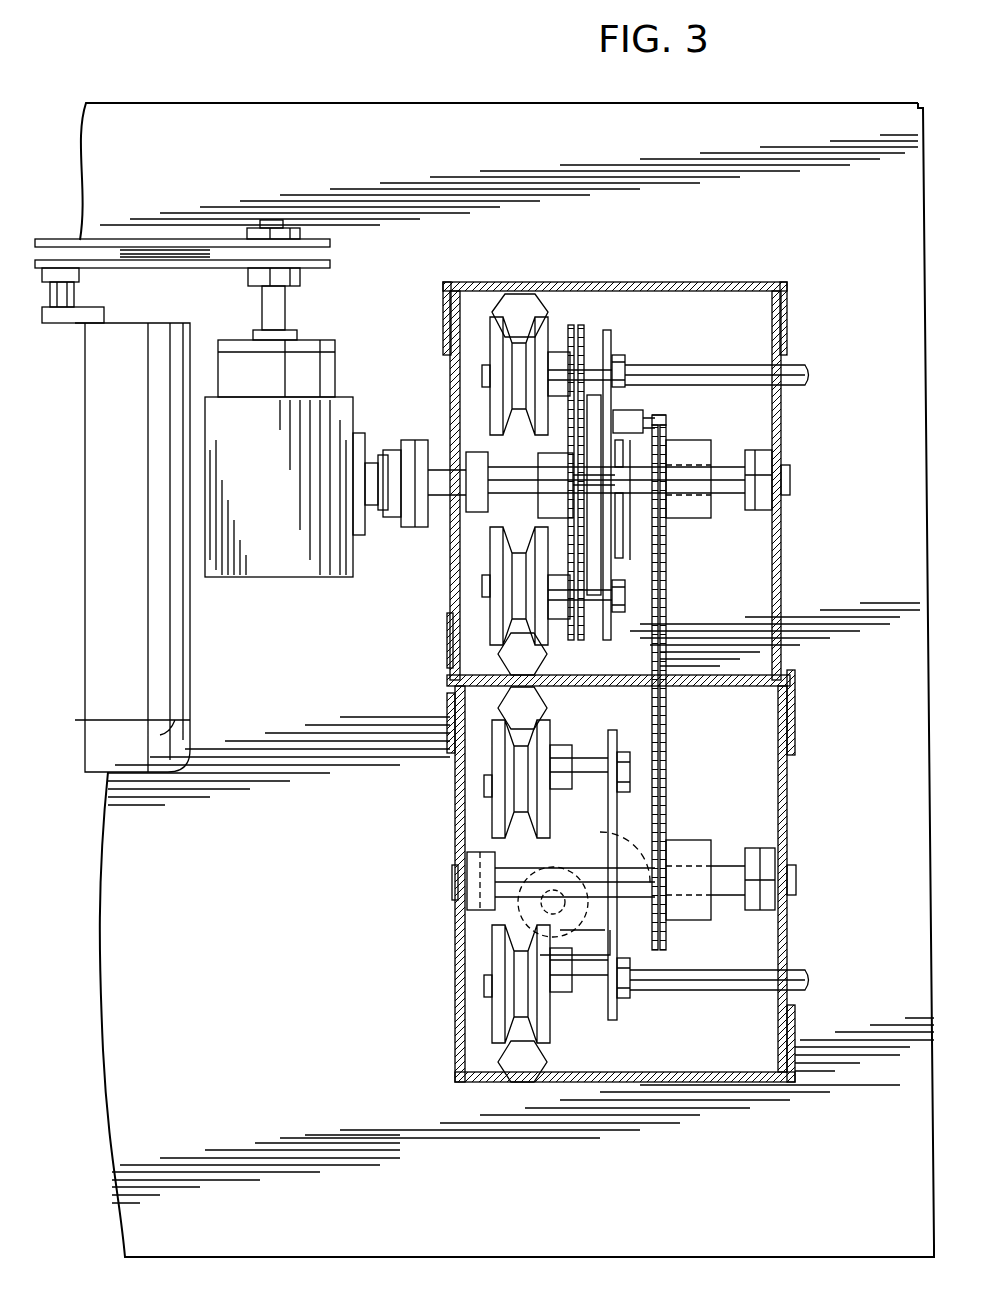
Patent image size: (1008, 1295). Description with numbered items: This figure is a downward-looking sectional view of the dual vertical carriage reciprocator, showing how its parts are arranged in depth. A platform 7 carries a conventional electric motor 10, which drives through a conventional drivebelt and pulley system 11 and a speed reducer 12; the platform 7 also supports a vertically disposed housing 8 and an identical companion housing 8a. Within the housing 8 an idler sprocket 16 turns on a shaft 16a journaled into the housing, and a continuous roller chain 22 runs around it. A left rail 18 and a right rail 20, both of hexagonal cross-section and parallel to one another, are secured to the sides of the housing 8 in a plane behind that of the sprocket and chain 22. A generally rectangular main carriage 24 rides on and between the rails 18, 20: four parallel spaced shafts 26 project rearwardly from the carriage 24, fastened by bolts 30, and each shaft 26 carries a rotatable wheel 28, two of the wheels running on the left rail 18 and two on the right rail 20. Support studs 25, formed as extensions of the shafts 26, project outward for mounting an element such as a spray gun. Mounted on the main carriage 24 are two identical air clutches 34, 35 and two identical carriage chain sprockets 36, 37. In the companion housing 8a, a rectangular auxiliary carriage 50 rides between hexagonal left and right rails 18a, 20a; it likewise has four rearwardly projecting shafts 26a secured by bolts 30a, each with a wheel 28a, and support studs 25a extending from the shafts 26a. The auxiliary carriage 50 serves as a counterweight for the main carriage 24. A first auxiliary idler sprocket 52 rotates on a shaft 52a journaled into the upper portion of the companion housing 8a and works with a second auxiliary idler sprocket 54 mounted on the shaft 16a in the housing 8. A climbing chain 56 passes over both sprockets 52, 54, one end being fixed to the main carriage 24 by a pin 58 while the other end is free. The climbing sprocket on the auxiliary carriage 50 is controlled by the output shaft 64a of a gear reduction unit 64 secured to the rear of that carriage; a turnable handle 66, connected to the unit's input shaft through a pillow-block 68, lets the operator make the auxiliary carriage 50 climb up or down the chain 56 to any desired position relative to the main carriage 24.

The platform 7 is at (517, 113).
The housing 8 is at (735, 283).
The companion housing 8a is at (712, 1082).
The electric motor 10 is at (132, 547).
The drivebelt and pulley system 11 is at (175, 243).
The speed reducer 12 is at (285, 458).
The idler sprocket 16 is at (550, 470).
The shaft 16a is at (790, 478).
The left rail 18 is at (510, 655).
The left rail 18a is at (530, 1078).
The right rail 20 is at (515, 312).
The right rail 20a is at (520, 709).
The roller chain 22 is at (568, 335).
The main carriage 24 is at (608, 352).
The support studs 25 is at (798, 365).
The support studs 25a is at (800, 972).
The shafts 26 is at (595, 355).
The shafts 26a is at (575, 760).
The wheel 28 is at (495, 395).
The wheel 28a is at (497, 748).
The bolts 30 is at (622, 368).
The bolts 30a is at (624, 768).
The air clutch 34 is at (648, 532).
The air clutch 35 is at (640, 505).
The carriage chain sprocket 36 is at (560, 532).
The carriage chain sprocket 37 is at (618, 412).
The auxiliary carriage 50 is at (614, 1020).
The first auxiliary idler sprocket 52 is at (688, 850).
The shaft 52a is at (796, 884).
The second auxiliary idler sprocket 54 is at (693, 448).
The climbing chain 56 is at (668, 748).
The pin 58 is at (664, 428).
The gear reduction unit 64 is at (475, 925).
The output shaft 64a is at (615, 830).
The turnable handle 66 is at (515, 900).
The pillow-block 68 is at (598, 922).